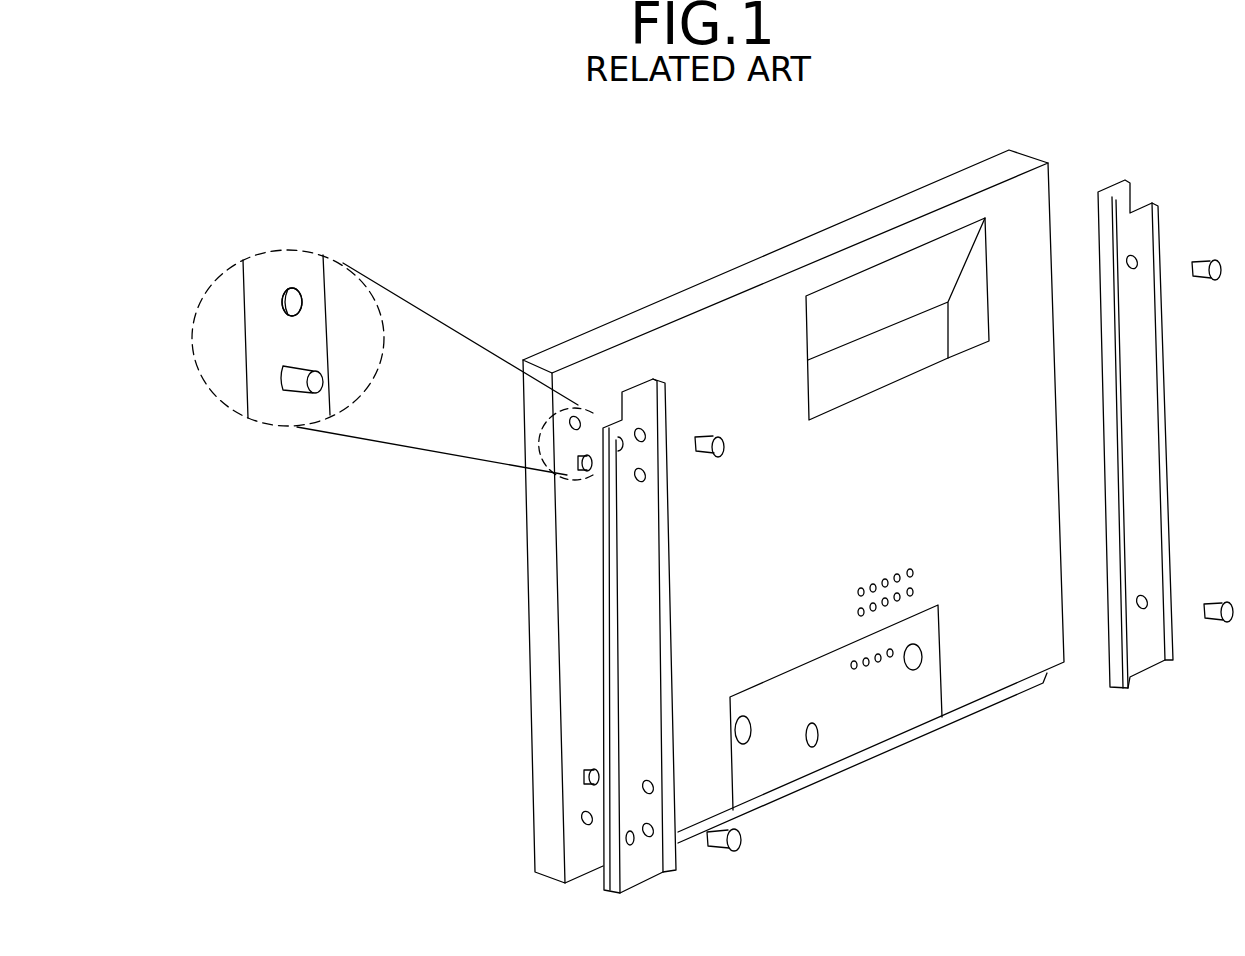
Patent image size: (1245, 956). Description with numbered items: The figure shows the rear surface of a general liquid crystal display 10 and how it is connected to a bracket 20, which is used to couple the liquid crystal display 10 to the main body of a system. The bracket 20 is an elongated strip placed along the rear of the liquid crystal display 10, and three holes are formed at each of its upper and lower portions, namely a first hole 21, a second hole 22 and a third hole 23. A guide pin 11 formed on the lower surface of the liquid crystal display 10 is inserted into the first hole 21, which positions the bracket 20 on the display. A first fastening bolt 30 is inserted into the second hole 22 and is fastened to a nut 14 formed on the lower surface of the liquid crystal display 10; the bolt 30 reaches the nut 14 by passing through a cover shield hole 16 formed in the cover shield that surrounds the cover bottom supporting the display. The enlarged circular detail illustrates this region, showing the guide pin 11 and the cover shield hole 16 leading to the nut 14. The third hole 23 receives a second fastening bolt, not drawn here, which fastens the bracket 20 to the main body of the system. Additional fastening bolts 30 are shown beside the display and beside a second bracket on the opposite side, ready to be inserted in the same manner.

The liquid crystal display 10 is at (797, 215).
The guide pin 11 is at (295, 388).
The nut 14 is at (288, 292).
The cover shield hole 16 is at (292, 302).
The bracket 20 is at (637, 375).
The first hole 21 is at (644, 478).
The second hole 22 is at (645, 432).
The third hole 23 is at (618, 443).
The first fastening bolt 30 is at (744, 458).